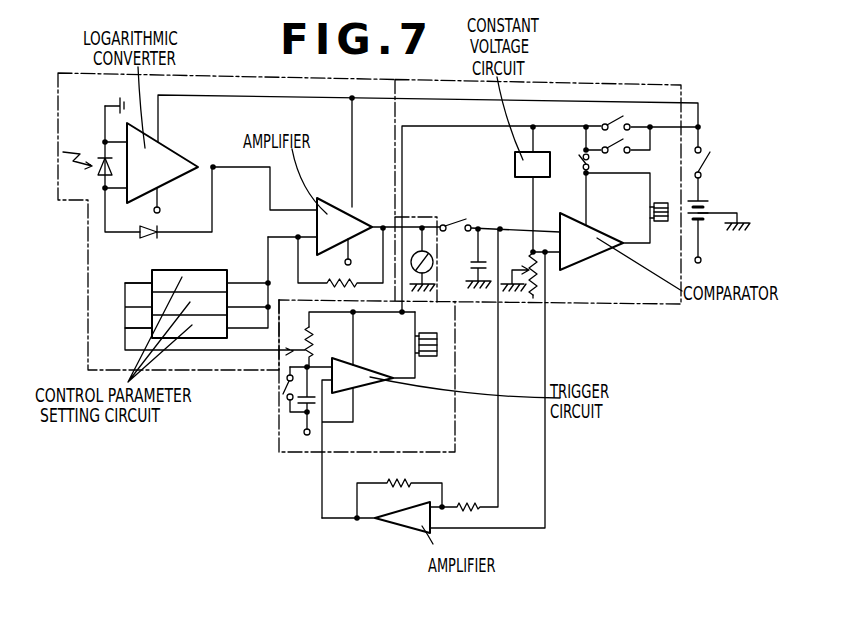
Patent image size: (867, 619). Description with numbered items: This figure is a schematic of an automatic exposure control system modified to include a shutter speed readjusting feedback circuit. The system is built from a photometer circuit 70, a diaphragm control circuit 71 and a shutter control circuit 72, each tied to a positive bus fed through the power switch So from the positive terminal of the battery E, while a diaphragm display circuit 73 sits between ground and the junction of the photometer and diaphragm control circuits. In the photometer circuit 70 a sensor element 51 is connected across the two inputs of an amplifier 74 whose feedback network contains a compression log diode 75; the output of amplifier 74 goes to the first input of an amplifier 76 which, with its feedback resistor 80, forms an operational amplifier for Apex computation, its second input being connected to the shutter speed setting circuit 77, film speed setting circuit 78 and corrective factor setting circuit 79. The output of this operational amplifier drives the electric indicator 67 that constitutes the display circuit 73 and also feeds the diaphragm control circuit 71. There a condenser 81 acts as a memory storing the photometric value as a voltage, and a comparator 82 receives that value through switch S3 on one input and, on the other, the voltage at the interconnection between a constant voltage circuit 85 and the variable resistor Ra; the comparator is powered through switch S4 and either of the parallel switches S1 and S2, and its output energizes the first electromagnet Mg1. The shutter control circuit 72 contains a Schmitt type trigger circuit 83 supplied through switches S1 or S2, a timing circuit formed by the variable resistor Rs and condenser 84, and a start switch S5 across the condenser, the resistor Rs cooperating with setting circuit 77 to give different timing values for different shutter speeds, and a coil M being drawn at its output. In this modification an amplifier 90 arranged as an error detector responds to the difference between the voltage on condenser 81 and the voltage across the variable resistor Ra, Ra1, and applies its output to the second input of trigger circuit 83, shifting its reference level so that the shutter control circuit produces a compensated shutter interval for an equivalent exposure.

The sensor element 51 is at (99, 172).
The photometer circuit 70 is at (93, 282).
The diaphragm control circuit 71 is at (646, 297).
The shutter control circuit 72 is at (442, 426).
The diaphragm display circuit 73 is at (413, 221).
The amplifier 74 is at (167, 157).
The compression log diode 75 is at (150, 241).
The amplifier 76 is at (337, 217).
The shutter speed setting circuit 77 is at (217, 268).
The film speed setting circuit 78 is at (150, 303).
The corrective factor setting circuit 79 is at (150, 326).
The feedback resistor 80 is at (340, 257).
The electric indicator 67 is at (432, 268).
The condenser 81 is at (473, 267).
The comparator 82 is at (577, 257).
The Schmitt type trigger circuit 83 is at (357, 375).
The condenser 84 is at (318, 400).
The constant voltage circuit 85 is at (528, 177).
The amplifier 90 is at (403, 520).
The switch S1 is at (606, 122).
The switch S2 is at (637, 157).
The switch S3 is at (466, 227).
The switch S4 is at (582, 161).
The start switch S5 is at (287, 389).
The power switch So is at (703, 167).
The electric power source or battery E is at (702, 206).
The first electromagnet Mg1 is at (652, 210).
The magnet coil M is at (438, 344).
The variable resistor Ra is at (531, 268).
The variable resistor Ra1 is at (528, 298).
The variable resistor Rs is at (307, 347).